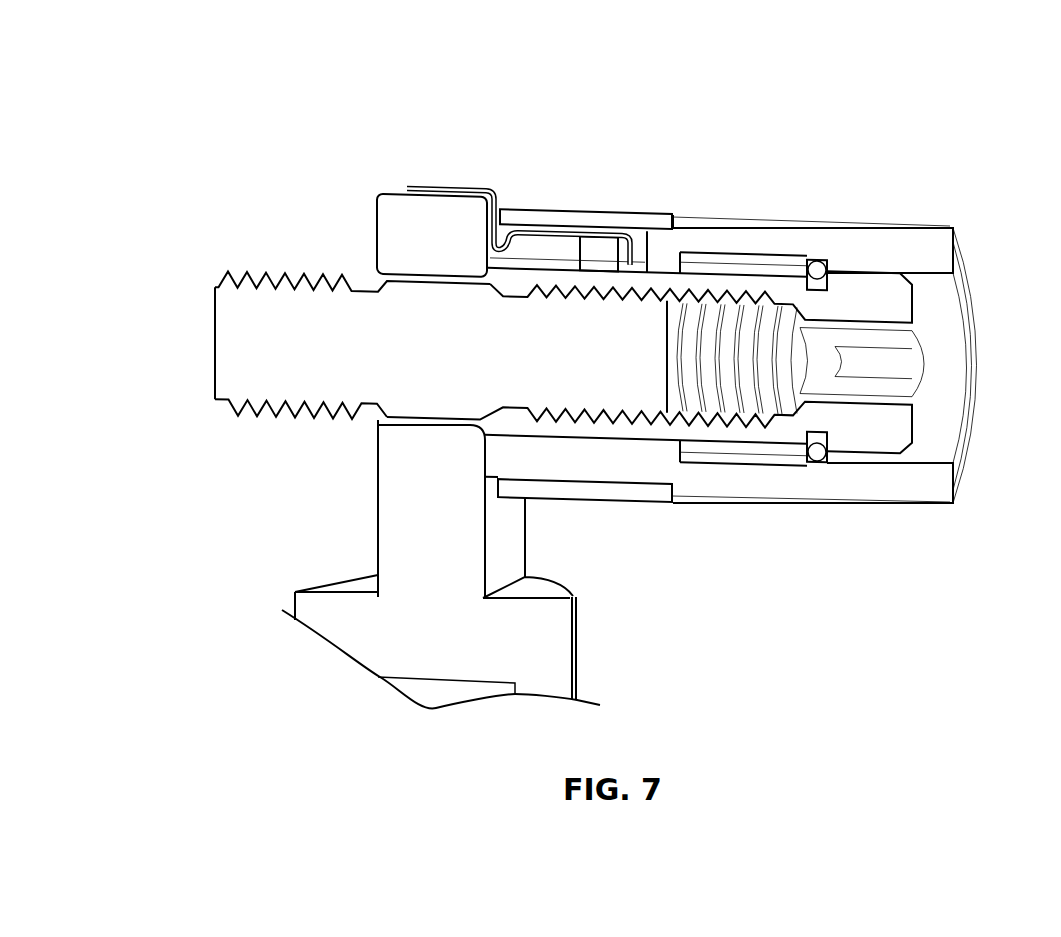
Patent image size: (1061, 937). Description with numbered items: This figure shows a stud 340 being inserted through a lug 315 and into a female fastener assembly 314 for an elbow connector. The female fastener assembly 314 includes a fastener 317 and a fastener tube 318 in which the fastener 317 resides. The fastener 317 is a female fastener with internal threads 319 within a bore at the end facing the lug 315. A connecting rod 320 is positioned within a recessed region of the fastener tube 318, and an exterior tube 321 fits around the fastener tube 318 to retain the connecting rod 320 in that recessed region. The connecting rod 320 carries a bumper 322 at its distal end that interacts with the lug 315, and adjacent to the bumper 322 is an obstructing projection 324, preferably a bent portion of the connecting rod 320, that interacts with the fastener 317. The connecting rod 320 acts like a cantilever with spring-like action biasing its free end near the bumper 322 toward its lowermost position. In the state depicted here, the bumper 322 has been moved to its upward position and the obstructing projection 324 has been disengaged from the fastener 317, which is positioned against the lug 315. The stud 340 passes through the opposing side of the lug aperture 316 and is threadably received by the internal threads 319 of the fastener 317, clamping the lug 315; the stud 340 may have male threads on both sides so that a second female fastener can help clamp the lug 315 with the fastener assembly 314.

The female fastener assembly 314 is at (853, 121).
The lug 315 is at (323, 602).
The lug aperture 316 is at (383, 417).
The fastener 317 is at (873, 440).
The fastener tube 318 is at (928, 492).
The internal threads 319 is at (756, 310).
The connecting rod 320 is at (548, 207).
The exterior tube 321 is at (648, 210).
The bumper 322 is at (418, 187).
The obstructing projection 324 is at (497, 205).
The stud 340 is at (242, 342).